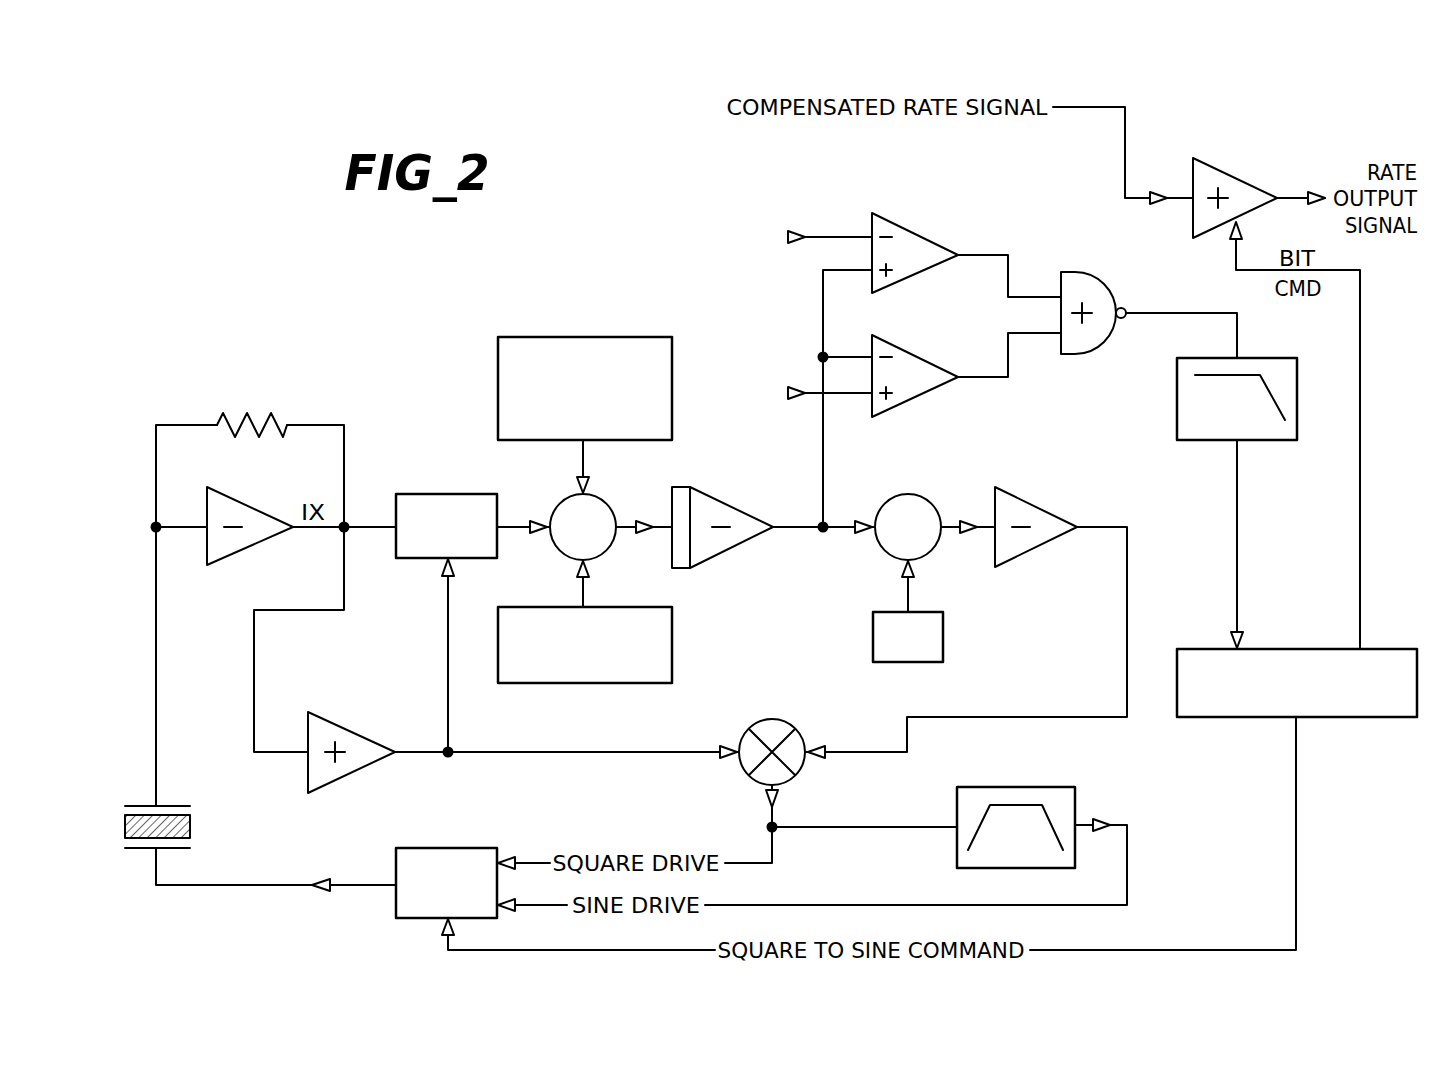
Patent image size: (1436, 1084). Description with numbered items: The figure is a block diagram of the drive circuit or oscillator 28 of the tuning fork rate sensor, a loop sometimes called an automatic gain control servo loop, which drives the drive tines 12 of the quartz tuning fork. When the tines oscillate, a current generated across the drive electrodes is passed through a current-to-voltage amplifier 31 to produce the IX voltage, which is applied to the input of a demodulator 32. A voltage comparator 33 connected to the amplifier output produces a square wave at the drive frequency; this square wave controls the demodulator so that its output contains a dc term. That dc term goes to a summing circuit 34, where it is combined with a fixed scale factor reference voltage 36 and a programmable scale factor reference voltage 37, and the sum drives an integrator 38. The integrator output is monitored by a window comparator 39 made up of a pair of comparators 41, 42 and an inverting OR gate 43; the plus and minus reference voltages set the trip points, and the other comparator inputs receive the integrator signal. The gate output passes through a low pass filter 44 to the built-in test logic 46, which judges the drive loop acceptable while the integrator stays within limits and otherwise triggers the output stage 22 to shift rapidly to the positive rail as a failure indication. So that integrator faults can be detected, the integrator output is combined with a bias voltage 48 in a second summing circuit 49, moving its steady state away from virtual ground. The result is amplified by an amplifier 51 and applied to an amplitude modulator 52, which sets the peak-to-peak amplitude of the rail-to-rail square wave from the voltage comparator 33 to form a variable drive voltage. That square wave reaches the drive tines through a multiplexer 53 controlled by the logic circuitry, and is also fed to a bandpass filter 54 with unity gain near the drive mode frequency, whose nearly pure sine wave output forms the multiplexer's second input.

The drive tines 12 is at (172, 815).
The output stage 22 is at (1193, 222).
The drive circuit or oscillator 28 is at (400, 400).
The current-to-voltage amplifier 31 is at (236, 555).
The demodulator 32 is at (443, 493).
The voltage comparator 33 is at (362, 772).
The summing circuit 34 is at (561, 508).
The fixed scale factor reference voltage 36 is at (591, 684).
The programmable scale factor reference voltage 37 is at (675, 362).
The integrator 38 is at (737, 550).
The window comparator 39 is at (921, 302).
The comparator 41 is at (908, 278).
The comparator 42 is at (908, 401).
The inverting OR gate 43 is at (1097, 353).
The low pass filter 44 is at (1260, 443).
The built-in test logic 46 is at (1330, 719).
The bias voltage 48 is at (943, 642).
The summing circuit 49 is at (879, 546).
The amplifier 51 is at (1033, 555).
The amplitude modulator 52 is at (745, 775).
The multiplexer 53 is at (488, 848).
The bandpass filter 54 is at (957, 800).